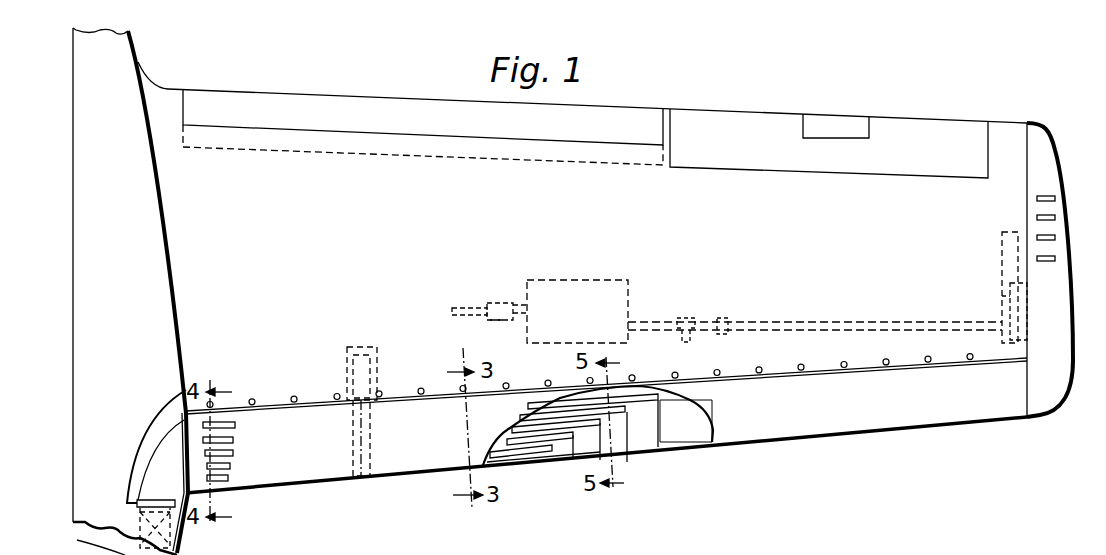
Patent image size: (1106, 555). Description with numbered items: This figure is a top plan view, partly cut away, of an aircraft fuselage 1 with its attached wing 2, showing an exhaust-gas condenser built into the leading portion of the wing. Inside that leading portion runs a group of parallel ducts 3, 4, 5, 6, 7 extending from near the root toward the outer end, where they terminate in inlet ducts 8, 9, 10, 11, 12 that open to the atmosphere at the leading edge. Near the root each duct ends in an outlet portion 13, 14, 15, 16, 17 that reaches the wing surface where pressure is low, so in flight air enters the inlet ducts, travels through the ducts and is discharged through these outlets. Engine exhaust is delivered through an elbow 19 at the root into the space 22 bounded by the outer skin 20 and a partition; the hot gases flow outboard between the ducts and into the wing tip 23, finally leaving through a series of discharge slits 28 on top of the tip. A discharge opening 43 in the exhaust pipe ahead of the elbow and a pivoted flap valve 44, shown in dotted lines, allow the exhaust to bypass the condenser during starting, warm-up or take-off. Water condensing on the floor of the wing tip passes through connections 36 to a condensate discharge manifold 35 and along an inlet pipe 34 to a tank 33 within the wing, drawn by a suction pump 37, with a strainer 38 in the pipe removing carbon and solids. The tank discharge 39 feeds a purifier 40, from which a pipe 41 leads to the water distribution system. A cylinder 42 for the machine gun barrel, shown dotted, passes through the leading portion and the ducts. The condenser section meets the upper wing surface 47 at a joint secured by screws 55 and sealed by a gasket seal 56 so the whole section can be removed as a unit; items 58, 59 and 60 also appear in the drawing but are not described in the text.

The aircraft fuselage 1 is at (166, 234).
The wing 2 is at (635, 106).
The duct 3 is at (503, 457).
The duct 4 is at (515, 442).
The duct 5 is at (533, 432).
The duct 6 is at (540, 420).
The duct 7 is at (553, 404).
The inlet duct 8 is at (543, 460).
The inlet duct 9 is at (565, 455).
The inlet duct 10 is at (587, 452).
The inlet duct 11 is at (620, 450).
The inlet duct 12 is at (652, 442).
The outlet portion 13 is at (217, 481).
The outlet portion 14 is at (231, 466).
The outlet portion 15 is at (233, 453).
The outlet portion 16 is at (236, 440).
The outlet portion 17 is at (235, 423).
The elbow 19 is at (163, 462).
The outer skin 20 is at (425, 458).
The space 22 is at (598, 425).
The wing tip 23 is at (1046, 418).
The discharge slits 28 is at (1037, 258).
The tank 33 is at (620, 298).
The inlet pipe 34 is at (875, 320).
The condensate discharge manifold 35 is at (1002, 296).
The connections 36 is at (1011, 229).
The suction pump 37 is at (697, 341).
The strainer 38 is at (729, 318).
The discharge 39 is at (516, 303).
The purifier 40 is at (503, 321).
The pipe 41 is at (467, 307).
The cylinder 42 is at (372, 446).
The discharge opening 43 is at (172, 513).
The pivoted flap valve 44 is at (132, 512).
The upper wing surface 47 is at (435, 230).
The screws 55 is at (853, 374).
The gasket seal 56 is at (797, 374).
The duct 58 is at (352, 480).
The valve 59 is at (353, 360).
The valve housing 60 is at (360, 347).